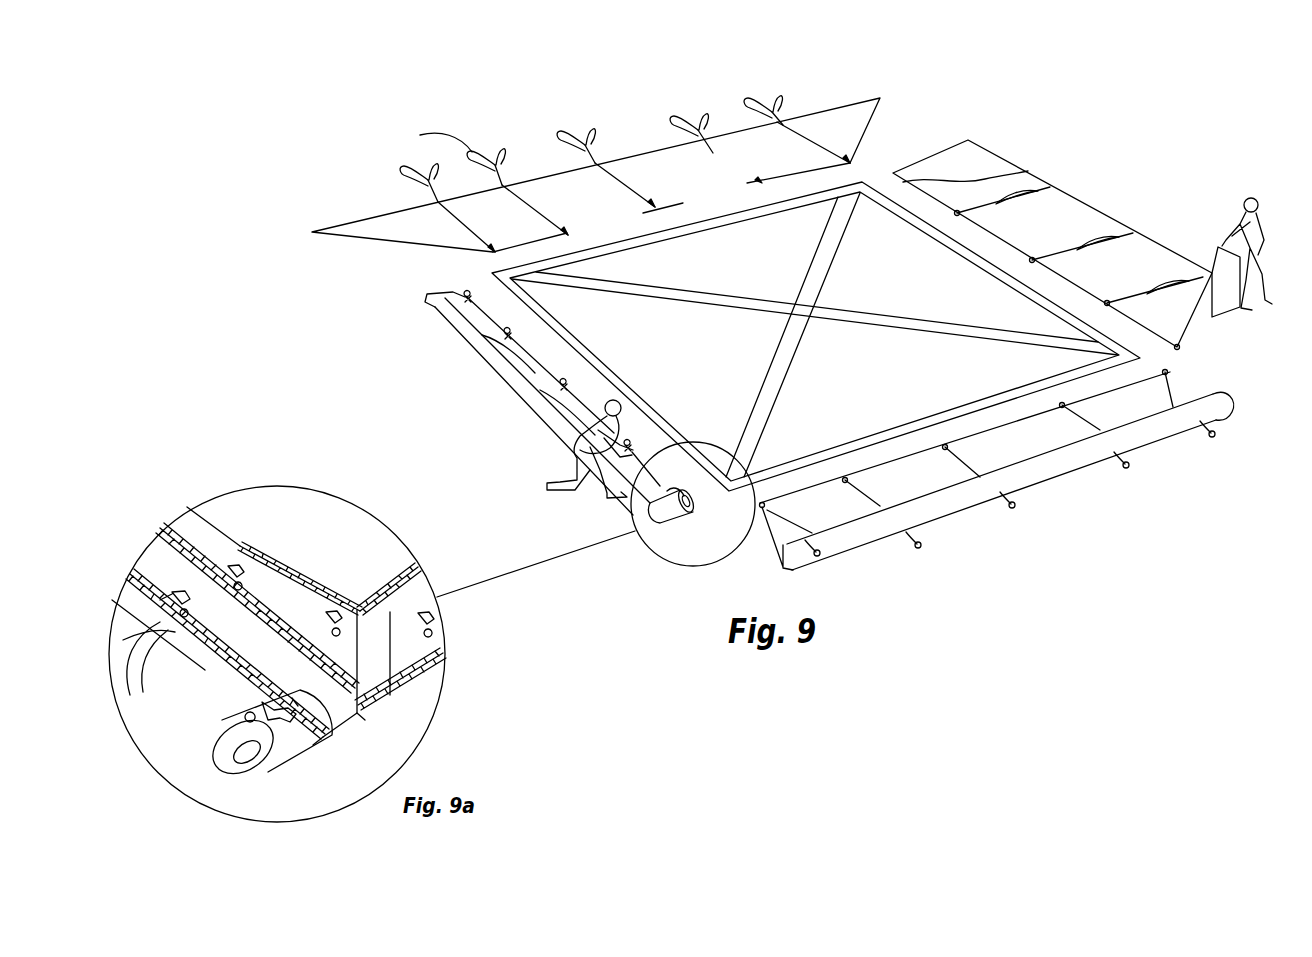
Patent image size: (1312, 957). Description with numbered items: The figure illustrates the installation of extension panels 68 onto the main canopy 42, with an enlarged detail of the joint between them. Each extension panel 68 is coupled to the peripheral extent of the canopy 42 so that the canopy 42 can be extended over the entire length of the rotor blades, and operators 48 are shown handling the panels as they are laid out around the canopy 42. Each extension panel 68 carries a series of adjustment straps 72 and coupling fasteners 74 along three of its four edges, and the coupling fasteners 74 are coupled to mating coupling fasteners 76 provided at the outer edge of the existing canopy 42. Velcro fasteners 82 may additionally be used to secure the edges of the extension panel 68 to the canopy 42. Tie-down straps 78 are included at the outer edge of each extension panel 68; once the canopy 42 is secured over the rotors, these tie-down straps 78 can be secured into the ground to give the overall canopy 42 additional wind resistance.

In FIG. 9, the canopy 42 is at (694, 369).
In FIG. 9A, the canopy 42 is at (285, 522).
In FIG. 9, the operator 48 is at (1262, 200).
In FIG. 9, the extension panel 68 is at (831, 118).
In FIG. 9A, the extension panel 68 is at (248, 757).
In FIG. 9A, the adjustment strap 72 is at (125, 645).
In FIG. 9A, the coupling fastener 74 is at (197, 603).
In FIG. 9A, the coupling fastener 76 is at (235, 574).
In FIG. 9, the tie-down strap 78 is at (405, 165).
In FIG. 9A, the Velcro fastener 82 is at (313, 745).